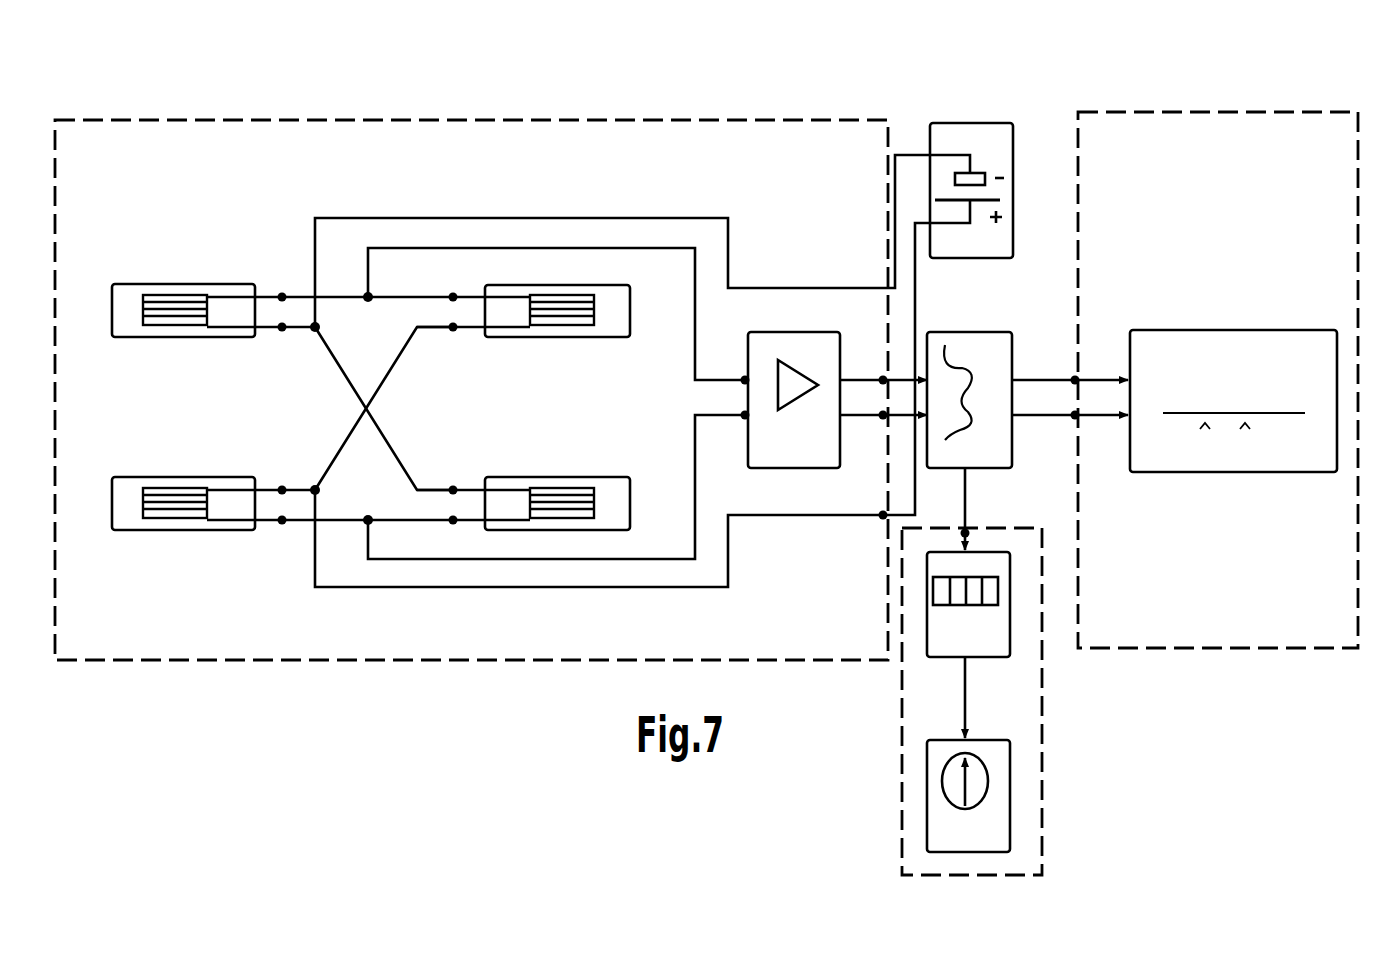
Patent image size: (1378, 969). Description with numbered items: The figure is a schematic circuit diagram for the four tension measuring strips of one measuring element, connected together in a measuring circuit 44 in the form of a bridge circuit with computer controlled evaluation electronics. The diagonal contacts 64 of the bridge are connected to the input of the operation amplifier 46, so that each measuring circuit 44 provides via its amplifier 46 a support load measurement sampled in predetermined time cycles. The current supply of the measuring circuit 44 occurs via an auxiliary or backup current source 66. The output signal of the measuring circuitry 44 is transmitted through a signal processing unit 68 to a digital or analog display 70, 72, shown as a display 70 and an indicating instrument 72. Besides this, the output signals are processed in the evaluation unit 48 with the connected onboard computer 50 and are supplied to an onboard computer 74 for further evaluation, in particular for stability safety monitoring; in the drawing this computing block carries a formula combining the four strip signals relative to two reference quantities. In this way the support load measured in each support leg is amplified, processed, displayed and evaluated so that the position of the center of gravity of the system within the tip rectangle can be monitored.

The measuring circuit 44 is at (298, 268).
The operation amplifier 46 is at (815, 352).
The evaluation unit 48 is at (1108, 340).
The onboard computer 50 is at (1168, 162).
The onboard computer 74 is at (1233, 401).
The diagonal contacts 64 is at (365, 304).
The auxiliary current source 66 is at (993, 152).
The signal processing unit 68 is at (938, 356).
The digital display 70 is at (993, 563).
The analog display 72 is at (993, 783).